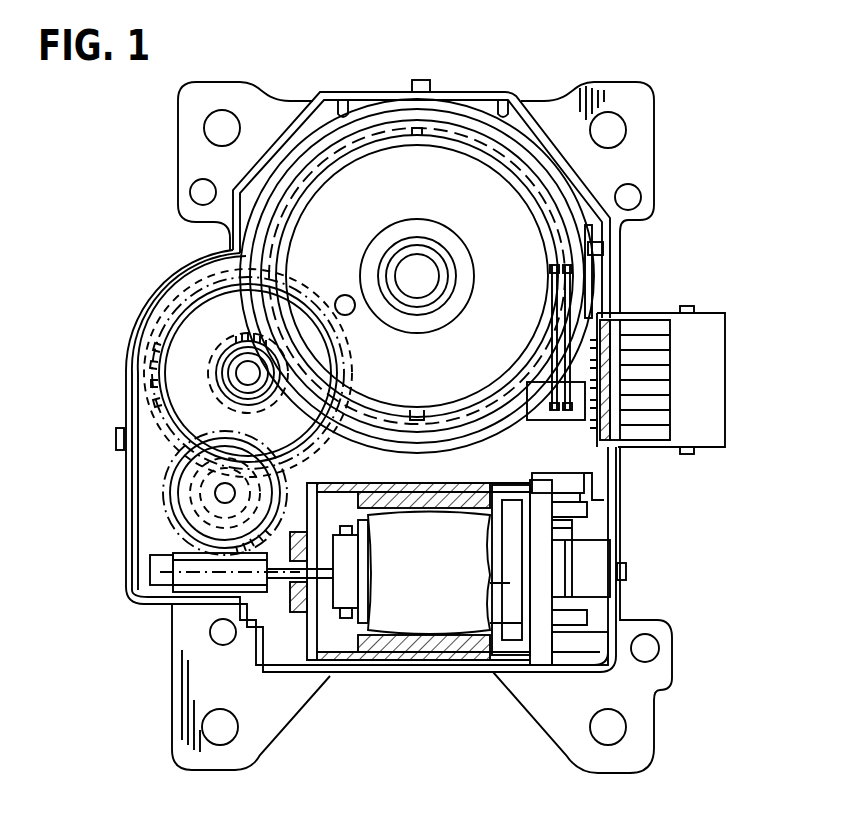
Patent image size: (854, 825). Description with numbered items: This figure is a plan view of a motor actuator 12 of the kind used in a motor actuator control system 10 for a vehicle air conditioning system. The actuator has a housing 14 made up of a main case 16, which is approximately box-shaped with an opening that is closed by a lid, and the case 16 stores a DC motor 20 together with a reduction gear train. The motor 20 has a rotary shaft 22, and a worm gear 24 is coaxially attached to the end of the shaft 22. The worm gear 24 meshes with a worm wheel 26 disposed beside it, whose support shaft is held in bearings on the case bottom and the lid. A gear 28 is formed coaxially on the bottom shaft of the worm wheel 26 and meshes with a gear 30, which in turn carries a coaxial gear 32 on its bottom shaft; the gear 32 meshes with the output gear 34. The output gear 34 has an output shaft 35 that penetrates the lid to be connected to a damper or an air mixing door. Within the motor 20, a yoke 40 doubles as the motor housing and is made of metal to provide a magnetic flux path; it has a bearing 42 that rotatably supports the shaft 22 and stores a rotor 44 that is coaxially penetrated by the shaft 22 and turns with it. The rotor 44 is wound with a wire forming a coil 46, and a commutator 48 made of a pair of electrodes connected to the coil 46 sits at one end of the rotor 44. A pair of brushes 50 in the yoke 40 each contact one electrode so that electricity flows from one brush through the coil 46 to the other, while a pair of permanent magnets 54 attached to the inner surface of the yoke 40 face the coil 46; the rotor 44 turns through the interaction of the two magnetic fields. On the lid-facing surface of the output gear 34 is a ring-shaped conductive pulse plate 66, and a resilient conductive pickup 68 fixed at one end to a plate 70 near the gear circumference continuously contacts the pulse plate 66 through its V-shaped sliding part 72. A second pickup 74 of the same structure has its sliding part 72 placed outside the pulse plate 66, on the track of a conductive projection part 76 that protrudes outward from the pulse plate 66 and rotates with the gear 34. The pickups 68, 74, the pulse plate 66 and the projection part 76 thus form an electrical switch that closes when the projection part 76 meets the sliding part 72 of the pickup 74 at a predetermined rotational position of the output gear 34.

The motor actuator control system 10 is at (584, 283).
The motor actuator 12 is at (569, 76).
The housing 14 is at (633, 672).
The main case 16 is at (678, 689).
The DC motor 20 is at (389, 662).
The rotary shaft 22 is at (362, 556).
The worm gear 24 is at (192, 595).
The worm wheel 26 is at (172, 527).
The gear 28 is at (195, 490).
The gear 30 is at (163, 424).
The gear 32 is at (216, 396).
The output gear 34 is at (300, 172).
The output shaft 35 is at (413, 268).
The yoke 40 is at (468, 640).
The bearing 42 is at (300, 612).
The rotor 44 is at (434, 612).
The coil 46 is at (393, 606).
The commutator 48 is at (357, 508).
The brushes 50 is at (362, 501).
The permanent magnets 54 is at (440, 495).
The pulse plate 66 is at (445, 150).
The pickup 68 is at (555, 320).
The plate 70 is at (545, 418).
The V-shaped sliding part 72 is at (570, 266).
The pickup 74 is at (600, 308).
The projection part 76 is at (530, 168).